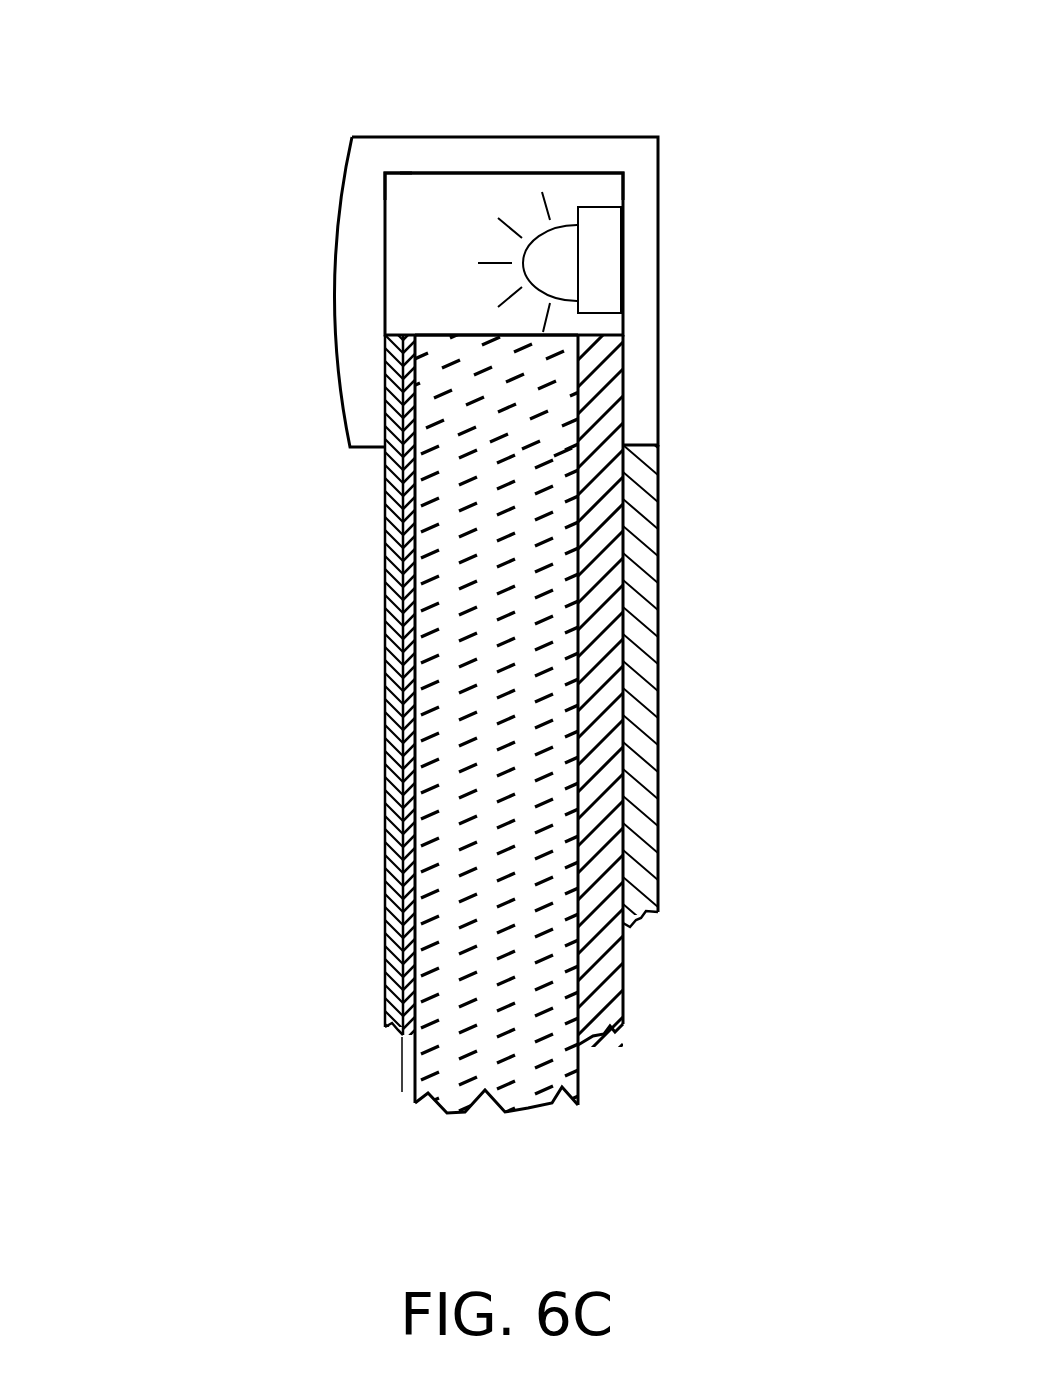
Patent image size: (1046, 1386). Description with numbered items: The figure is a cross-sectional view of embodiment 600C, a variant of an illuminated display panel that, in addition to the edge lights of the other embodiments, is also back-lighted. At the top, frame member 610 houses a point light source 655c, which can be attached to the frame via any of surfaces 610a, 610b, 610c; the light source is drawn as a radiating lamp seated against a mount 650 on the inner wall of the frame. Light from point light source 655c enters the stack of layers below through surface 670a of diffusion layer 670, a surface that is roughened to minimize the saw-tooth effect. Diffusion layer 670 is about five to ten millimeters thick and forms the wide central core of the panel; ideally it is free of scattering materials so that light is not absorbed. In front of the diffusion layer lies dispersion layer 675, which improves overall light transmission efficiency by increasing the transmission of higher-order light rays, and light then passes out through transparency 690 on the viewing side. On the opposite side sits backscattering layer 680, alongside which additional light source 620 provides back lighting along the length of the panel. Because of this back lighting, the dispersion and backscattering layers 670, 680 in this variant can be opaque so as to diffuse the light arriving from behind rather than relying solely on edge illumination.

The embodiment 600C is at (264, 96).
The frame member 610 is at (622, 137).
The surface 610a is at (387, 192).
The surface 610b is at (447, 175).
The surface 610c is at (620, 188).
The additional light source 620 is at (658, 717).
The light source mount 650 is at (623, 258).
The point light source 655c is at (562, 223).
The diffusion layer 670 is at (578, 1062).
The surface 670a is at (443, 333).
The dispersion layer 675 is at (402, 1037).
The backscattering layer 680 is at (625, 995).
The transparency 690 is at (387, 1003).